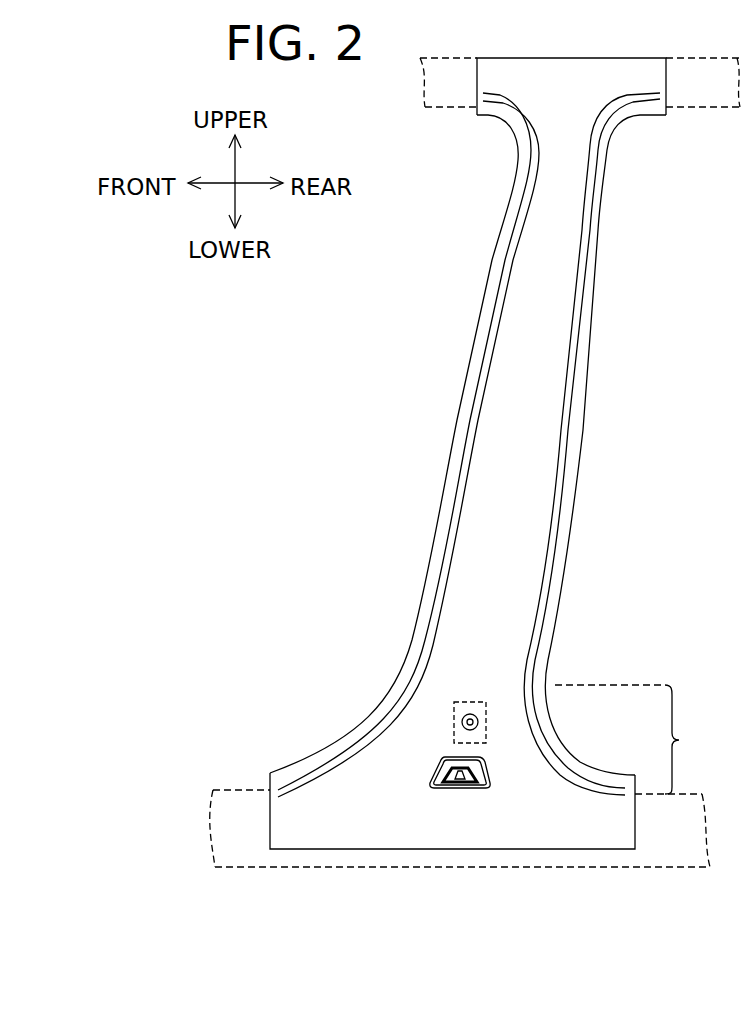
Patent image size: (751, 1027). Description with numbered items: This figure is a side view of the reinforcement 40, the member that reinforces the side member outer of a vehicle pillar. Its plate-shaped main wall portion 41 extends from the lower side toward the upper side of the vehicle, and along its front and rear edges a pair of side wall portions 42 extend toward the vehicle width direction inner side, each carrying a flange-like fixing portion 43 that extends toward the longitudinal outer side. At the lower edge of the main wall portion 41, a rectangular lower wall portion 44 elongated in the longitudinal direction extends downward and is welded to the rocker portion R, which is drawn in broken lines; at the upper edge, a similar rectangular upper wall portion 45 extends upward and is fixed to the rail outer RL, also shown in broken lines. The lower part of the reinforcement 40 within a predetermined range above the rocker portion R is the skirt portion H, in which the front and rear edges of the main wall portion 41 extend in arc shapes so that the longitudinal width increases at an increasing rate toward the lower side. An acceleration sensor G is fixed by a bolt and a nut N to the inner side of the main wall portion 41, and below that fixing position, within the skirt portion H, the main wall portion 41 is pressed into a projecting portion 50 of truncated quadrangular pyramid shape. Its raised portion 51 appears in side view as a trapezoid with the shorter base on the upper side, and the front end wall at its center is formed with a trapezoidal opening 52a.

The reinforcement 40 is at (382, 327).
The main wall portion 41 is at (563, 331).
The side wall portion 42 is at (455, 545).
The fixing portion 43 is at (452, 455).
The lower wall portion 44 is at (328, 830).
The upper wall portion 45 is at (545, 68).
The projecting portion 50 is at (492, 777).
The raised portion 51 is at (438, 762).
The trapezoidal opening 52a is at (455, 789).
The rail outer RL is at (703, 57).
The rocker portion R is at (664, 872).
The skirt portion H is at (631, 739).
The acceleration sensor G is at (472, 697).
The nut N is at (452, 722).